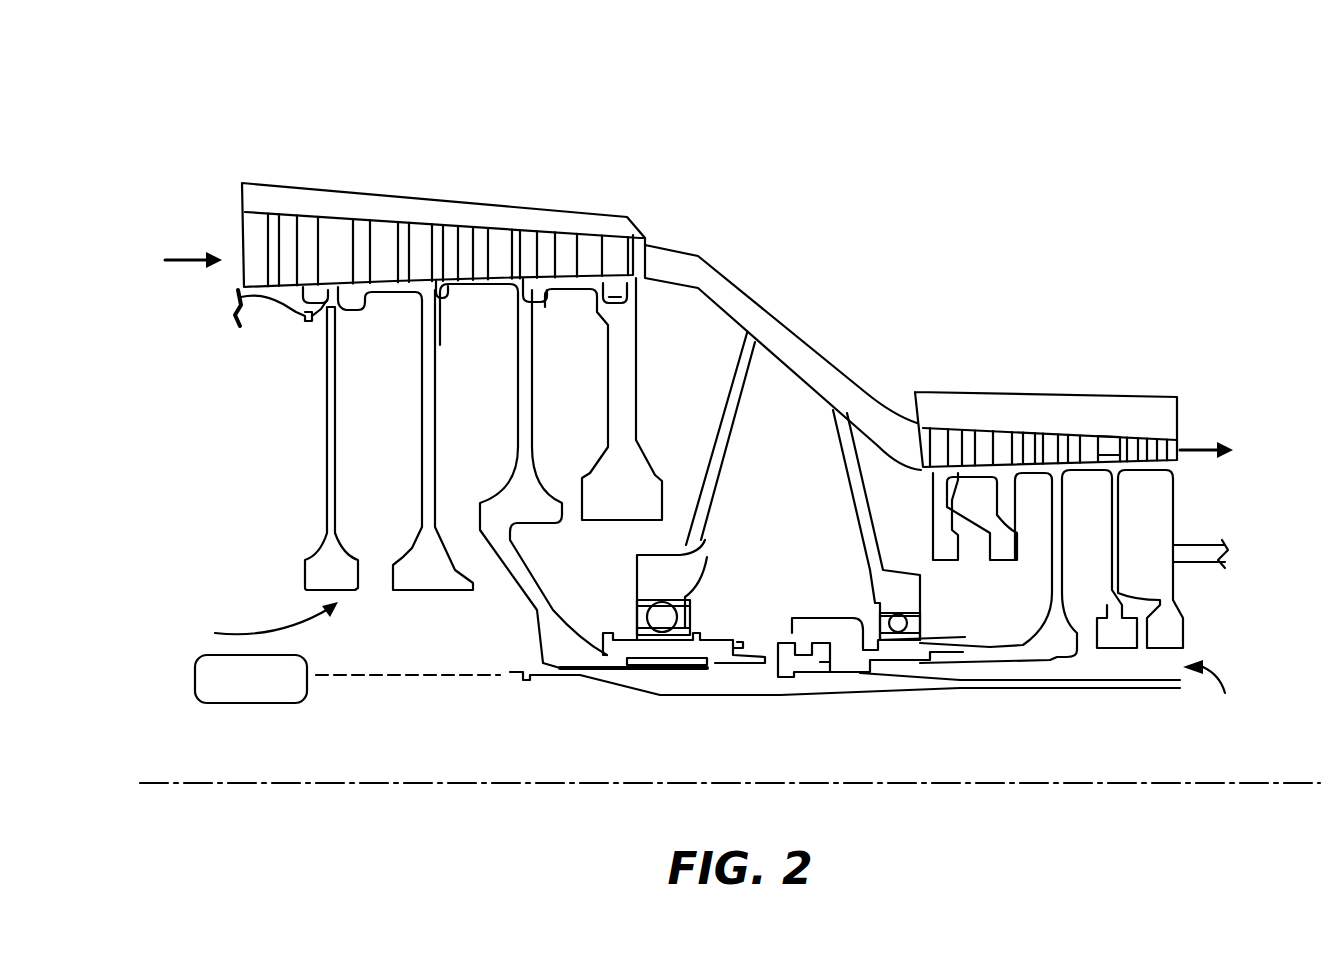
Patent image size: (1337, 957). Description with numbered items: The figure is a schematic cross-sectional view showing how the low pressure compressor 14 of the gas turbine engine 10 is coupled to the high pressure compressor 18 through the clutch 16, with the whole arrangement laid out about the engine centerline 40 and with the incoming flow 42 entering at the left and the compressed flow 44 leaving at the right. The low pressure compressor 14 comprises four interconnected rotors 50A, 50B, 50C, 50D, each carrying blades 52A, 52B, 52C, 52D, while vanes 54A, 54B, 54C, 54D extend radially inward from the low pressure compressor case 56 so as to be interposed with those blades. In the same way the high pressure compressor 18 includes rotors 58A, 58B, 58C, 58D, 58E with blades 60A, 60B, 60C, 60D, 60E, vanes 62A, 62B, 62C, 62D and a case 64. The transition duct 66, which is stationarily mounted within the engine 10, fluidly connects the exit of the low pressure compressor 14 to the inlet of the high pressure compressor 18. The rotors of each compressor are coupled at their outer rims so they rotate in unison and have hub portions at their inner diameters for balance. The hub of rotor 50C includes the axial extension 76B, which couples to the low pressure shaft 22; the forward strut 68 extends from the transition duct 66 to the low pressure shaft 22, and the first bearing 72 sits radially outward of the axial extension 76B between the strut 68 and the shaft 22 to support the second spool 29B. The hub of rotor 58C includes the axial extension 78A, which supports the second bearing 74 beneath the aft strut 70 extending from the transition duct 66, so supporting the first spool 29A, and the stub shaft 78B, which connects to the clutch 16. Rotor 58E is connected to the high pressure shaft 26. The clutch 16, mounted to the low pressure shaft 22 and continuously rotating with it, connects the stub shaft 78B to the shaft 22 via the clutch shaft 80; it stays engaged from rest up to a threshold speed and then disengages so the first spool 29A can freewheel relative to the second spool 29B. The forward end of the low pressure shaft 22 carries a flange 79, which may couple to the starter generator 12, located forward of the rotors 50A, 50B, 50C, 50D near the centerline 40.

The gas turbine engine 10 is at (922, 134).
The starter generator 12 is at (258, 685).
The low pressure compressor 14 is at (339, 138).
The clutch 16 is at (848, 660).
The high pressure compressor 18 is at (1080, 300).
The low pressure shaft 22 is at (723, 682).
The high pressure shaft 26 is at (1195, 548).
The first spool 29A is at (1214, 704).
The second spool 29B is at (251, 625).
The engine centerline 40 is at (1270, 782).
The inlet airflow 42 is at (188, 255).
The compressor exit airflow 44 is at (1213, 443).
The rotor 50A is at (325, 435).
The rotor 50B is at (421, 428).
The rotor 50C is at (516, 416).
The rotor 50D is at (606, 412).
The blades 52A is at (338, 308).
The blades 52B is at (437, 297).
The blades 52C is at (534, 305).
The blades 52D is at (626, 292).
The vanes 54A is at (268, 208).
The vanes 54B is at (382, 214).
The vanes 54C is at (478, 222).
The vanes 54D is at (576, 232).
The low pressure compressor case 56 is at (640, 226).
The rotor 58A is at (930, 535).
The rotor 58B is at (996, 535).
The rotor 58C is at (1048, 535).
The rotor 58D is at (1108, 535).
The rotor 58E is at (1160, 535).
The blades 60A is at (934, 440).
The blades 60B is at (1000, 445).
The blades 60C is at (1062, 445).
The blades 60D is at (1112, 445).
The blades 60E is at (1165, 445).
The vanes 62A is at (966, 430).
The vanes 62B is at (1030, 430).
The vanes 62C is at (1082, 435).
The vanes 62D is at (1128, 435).
The case 64 is at (914, 400).
The transition duct 66 is at (778, 302).
The forward strut 68 is at (735, 430).
The aft strut 70 is at (860, 532).
The bearing 72 is at (688, 618).
The bearing 74 is at (880, 625).
The axial extension 76B is at (630, 662).
The axial extension 78A is at (978, 660).
The stub shaft 78B is at (805, 620).
The flange 79 is at (515, 681).
The clutch shaft 80 is at (798, 692).